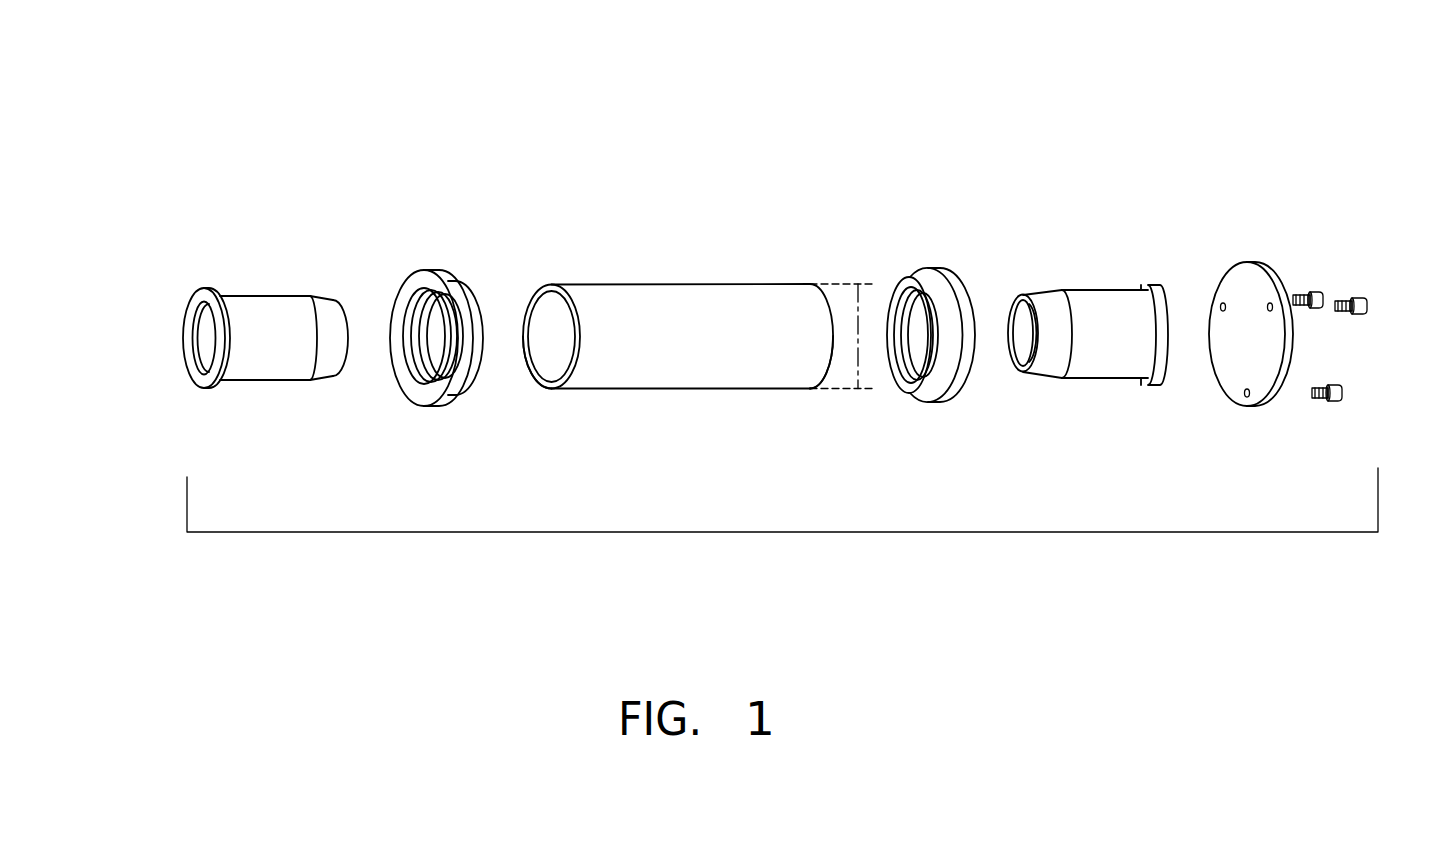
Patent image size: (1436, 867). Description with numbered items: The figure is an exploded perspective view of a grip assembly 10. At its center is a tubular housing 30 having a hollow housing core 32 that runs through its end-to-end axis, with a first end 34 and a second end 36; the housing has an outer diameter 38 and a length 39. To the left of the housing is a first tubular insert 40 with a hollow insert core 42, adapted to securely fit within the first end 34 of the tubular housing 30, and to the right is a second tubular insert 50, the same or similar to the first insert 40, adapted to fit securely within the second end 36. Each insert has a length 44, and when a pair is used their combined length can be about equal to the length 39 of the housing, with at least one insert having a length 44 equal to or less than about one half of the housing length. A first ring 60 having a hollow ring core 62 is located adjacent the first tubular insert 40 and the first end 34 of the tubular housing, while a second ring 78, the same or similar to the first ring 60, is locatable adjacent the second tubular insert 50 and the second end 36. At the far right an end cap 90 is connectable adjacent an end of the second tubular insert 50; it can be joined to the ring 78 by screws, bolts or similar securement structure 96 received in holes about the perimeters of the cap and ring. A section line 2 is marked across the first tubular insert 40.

The grip assembly 10 is at (590, 131).
The section line 2- 2 is at (203, 415).
The tubular housing 30 is at (663, 292).
The hollow housing core 32 is at (552, 334).
The first end 34 is at (540, 402).
The second end 36 is at (833, 396).
The outer diameter 38 is at (857, 308).
The length 39 is at (550, 390).
The first tubular insert 40 is at (263, 302).
The hollow insert core 42 is at (193, 342).
The length 44 is at (203, 427).
The second tubular insert 50 is at (1103, 300).
The first ring 60 is at (447, 273).
The hollow ring core 62 is at (420, 333).
The second ring 78 is at (948, 272).
The end cap 90 is at (1247, 265).
The securement structure 96 is at (1305, 296).